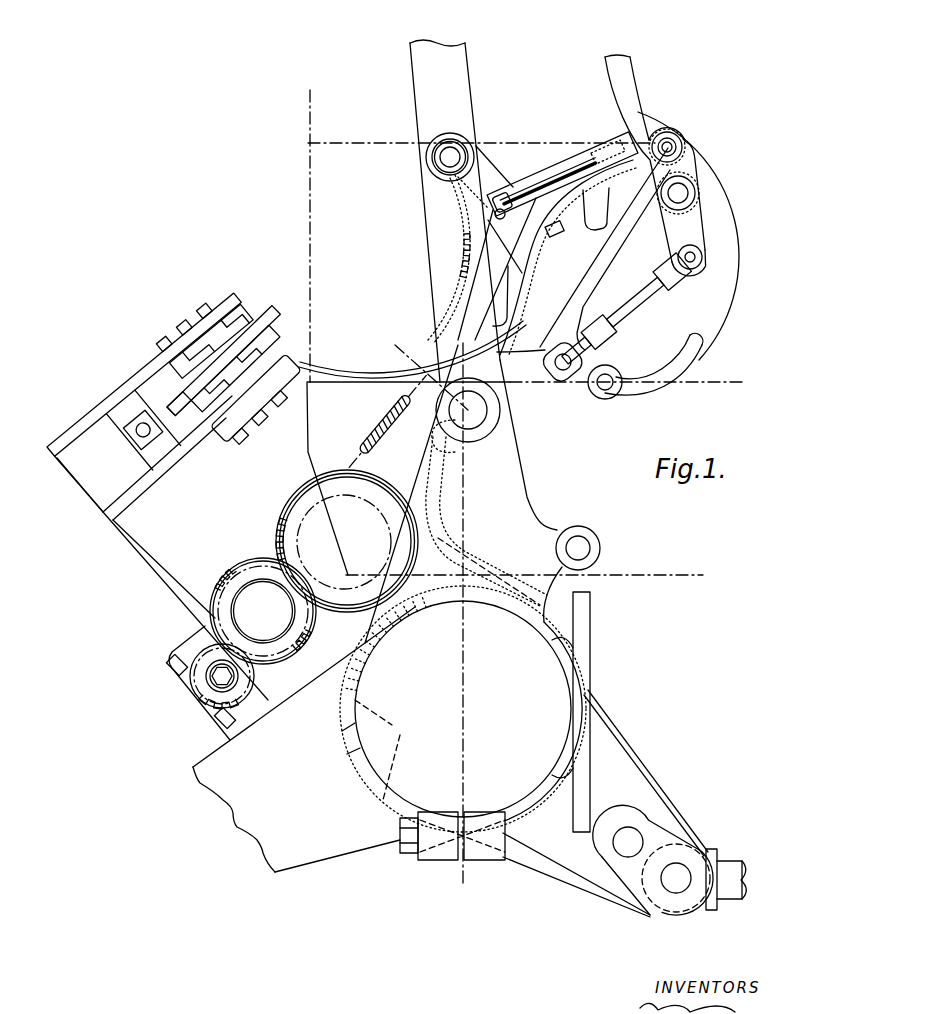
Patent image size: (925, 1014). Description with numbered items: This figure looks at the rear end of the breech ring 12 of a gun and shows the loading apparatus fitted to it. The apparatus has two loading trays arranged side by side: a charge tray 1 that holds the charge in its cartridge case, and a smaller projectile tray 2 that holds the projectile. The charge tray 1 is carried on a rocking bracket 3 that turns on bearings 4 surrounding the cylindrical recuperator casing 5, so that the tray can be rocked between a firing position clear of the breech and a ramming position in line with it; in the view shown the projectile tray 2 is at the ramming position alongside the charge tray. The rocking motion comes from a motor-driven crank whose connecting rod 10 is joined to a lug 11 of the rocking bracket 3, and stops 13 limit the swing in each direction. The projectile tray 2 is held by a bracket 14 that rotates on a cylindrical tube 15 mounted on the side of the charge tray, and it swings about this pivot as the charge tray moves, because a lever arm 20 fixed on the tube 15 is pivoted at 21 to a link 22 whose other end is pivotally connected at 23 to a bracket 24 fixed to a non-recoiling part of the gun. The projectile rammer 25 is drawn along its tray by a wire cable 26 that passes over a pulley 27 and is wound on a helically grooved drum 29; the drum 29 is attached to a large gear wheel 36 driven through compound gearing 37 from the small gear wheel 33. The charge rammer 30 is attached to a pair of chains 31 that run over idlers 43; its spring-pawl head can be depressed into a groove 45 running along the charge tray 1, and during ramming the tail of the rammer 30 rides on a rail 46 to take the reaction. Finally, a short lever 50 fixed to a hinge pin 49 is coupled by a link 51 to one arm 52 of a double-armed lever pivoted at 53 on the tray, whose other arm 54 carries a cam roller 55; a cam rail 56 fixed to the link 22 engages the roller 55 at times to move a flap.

The charge tray 1 is at (357, 370).
The projectile tray 2 is at (500, 323).
The rocking bracket 3 is at (443, 537).
The bearings 4 is at (399, 615).
The recuperator casing 5 is at (557, 697).
The connecting rod 10 is at (764, 866).
The lug 11 is at (672, 815).
The breech ring 12 is at (310, 162).
The stops 13 is at (382, 750).
The bracket 14 is at (500, 282).
The cylindrical tube 15 is at (488, 222).
The lever arm 20 is at (512, 182).
The pivot 21 is at (437, 157).
The link 22 is at (437, 285).
The pivotal connection 23 is at (470, 411).
The bracket 24 is at (515, 491).
The projectile rammer 25 is at (597, 228).
The wire cable 26 is at (382, 432).
The pulley 27 is at (547, 177).
The helically grooved drum 29 is at (385, 510).
The charge rammer 30 is at (470, 283).
The chains 31 is at (207, 410).
The small gear wheel 33 is at (212, 706).
The large gear wheel 36 is at (275, 531).
The compound gearing 37 is at (293, 650).
The idlers 43 is at (170, 392).
The slot or groove 45 is at (250, 316).
The rail 46 is at (650, 377).
The hinge pin 49 is at (617, 386).
The short lever 50 is at (595, 393).
The link 51 is at (627, 317).
The arm 52 is at (702, 243).
The pivot 53 is at (679, 193).
The other arm 54 is at (684, 172).
The cam roller 55 is at (677, 142).
The cam rail 56 is at (643, 118).